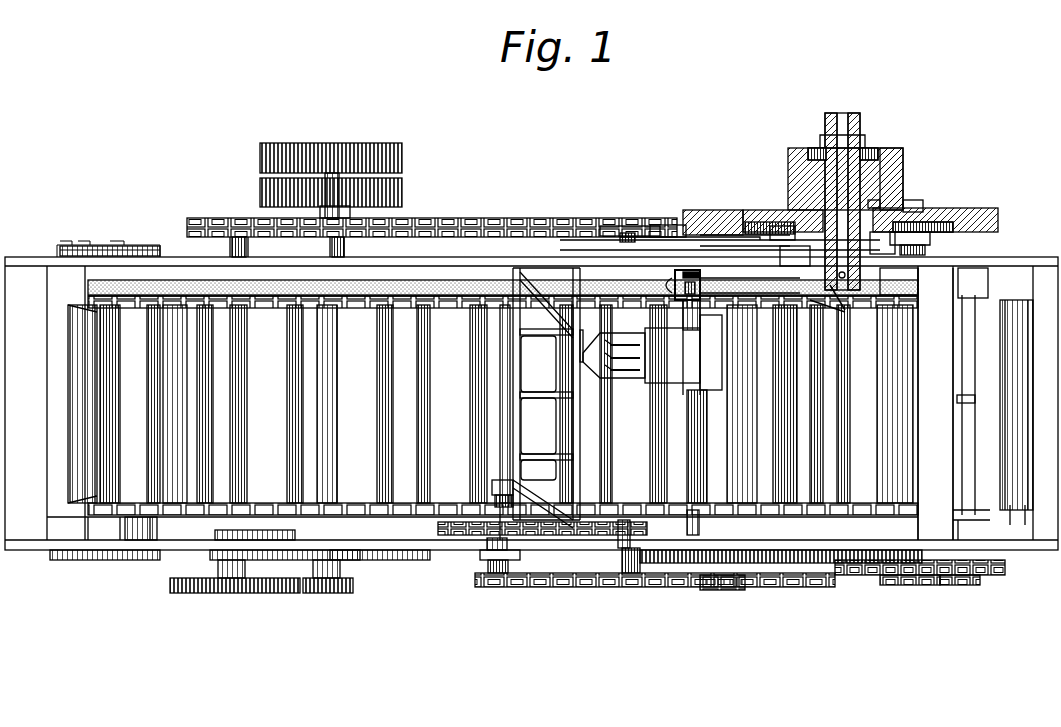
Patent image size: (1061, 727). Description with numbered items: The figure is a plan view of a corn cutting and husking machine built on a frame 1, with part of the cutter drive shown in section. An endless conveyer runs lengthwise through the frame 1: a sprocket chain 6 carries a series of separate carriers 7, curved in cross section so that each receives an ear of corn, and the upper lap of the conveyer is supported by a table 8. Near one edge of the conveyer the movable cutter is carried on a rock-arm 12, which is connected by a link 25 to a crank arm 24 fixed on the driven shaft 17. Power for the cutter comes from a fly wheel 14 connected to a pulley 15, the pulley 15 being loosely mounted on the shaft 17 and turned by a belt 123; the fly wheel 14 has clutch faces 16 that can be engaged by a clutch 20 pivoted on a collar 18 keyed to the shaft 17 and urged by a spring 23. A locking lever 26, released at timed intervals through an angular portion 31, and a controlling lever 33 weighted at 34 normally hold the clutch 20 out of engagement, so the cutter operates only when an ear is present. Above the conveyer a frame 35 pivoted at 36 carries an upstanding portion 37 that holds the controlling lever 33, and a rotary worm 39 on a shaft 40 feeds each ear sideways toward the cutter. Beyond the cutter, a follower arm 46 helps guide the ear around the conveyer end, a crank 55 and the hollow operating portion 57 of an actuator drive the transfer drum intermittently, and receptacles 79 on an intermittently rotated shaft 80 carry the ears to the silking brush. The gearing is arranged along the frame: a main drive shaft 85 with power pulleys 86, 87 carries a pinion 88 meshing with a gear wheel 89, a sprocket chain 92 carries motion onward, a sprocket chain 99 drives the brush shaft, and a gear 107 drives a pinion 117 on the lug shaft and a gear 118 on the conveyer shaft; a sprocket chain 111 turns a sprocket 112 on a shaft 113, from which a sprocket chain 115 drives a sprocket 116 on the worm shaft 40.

The frame 1 is at (118, 262).
The sprocket chain 6 is at (368, 300).
The carriers 7 is at (80, 343).
The table 8 is at (348, 404).
The rock-arm 12 is at (672, 278).
The fly wheel 14 is at (960, 215).
The pulley 15 is at (873, 165).
The teeth or clutch faces 16 is at (795, 220).
The shaft 17 is at (818, 150).
The collar 18 is at (878, 205).
The clutch 20 is at (919, 404).
The spring 23 is at (920, 205).
The crank arm 24 is at (835, 310).
The link 25 is at (710, 222).
The locking lever 26 is at (760, 225).
The angular portion 31 is at (695, 235).
The controlling lever 33 is at (675, 250).
The weight 34 is at (920, 248).
The frame 35 is at (556, 335).
The pivot 36 is at (495, 500).
The upstanding portion 37 is at (690, 362).
The rotary worm 39 is at (640, 345).
The shaft 40 is at (630, 402).
The arm 46 is at (965, 400).
The crank 55 is at (640, 247).
The hollow operating portion 57 is at (655, 235).
The receptacles 79 is at (1000, 400).
The shaft 80 is at (1020, 437).
The main drive shaft 85 is at (365, 203).
The pulley 86 is at (260, 152).
The pulley 87 is at (260, 185).
The pinion 88 is at (320, 595).
The gear wheel 89 is at (215, 593).
The sprocket chain 92 is at (500, 220).
The sprocket chain 99 is at (895, 580).
The gear 107 is at (780, 565).
The sprocket chain 111 is at (570, 590).
The sprocket 112 is at (508, 580).
The shaft 113 is at (490, 568).
The sprocket chain 115 is at (445, 540).
The sprocket 116 is at (630, 575).
The pinion 117 is at (725, 575).
The gear 118 is at (868, 575).
The belt 123 is at (893, 175).